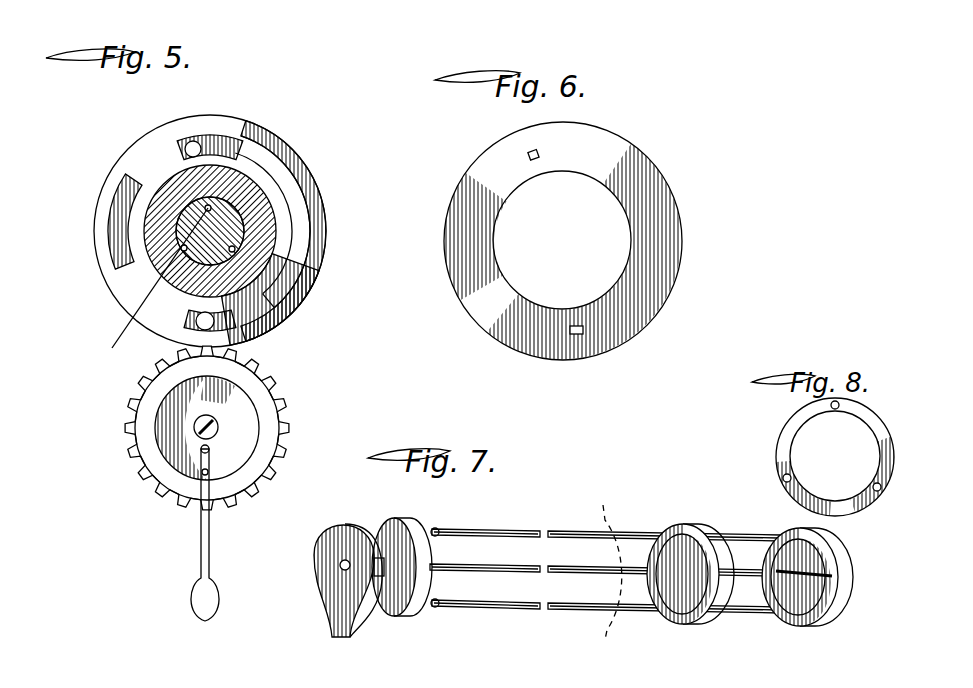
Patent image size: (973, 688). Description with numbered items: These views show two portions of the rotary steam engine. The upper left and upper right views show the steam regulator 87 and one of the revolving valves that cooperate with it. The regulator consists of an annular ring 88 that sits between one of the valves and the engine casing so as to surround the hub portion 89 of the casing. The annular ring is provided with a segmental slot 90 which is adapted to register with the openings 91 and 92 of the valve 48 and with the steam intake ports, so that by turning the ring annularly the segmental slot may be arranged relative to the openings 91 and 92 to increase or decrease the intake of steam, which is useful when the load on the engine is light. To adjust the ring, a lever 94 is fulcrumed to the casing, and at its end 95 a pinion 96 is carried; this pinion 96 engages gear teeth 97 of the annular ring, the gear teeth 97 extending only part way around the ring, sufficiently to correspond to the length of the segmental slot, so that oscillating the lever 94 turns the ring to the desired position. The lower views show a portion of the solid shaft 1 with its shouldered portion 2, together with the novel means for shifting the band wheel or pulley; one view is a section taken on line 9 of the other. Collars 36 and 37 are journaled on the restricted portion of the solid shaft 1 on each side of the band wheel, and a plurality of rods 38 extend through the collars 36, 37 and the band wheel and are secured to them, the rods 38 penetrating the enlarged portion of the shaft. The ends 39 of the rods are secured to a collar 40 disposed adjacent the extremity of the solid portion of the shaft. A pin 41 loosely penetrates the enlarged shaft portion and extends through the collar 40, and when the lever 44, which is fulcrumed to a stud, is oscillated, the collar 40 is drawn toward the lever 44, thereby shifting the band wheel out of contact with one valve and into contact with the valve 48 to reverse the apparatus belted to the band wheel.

In FIG. 5, the solid shaft 1 is at (159, 284).
In FIG. 5, the shouldered portion 2 is at (160, 187).
In FIG. 7, the section line 9 is at (610, 571).
In FIG. 7, the collar 36 is at (834, 563).
In FIG. 7, the collar 37 is at (688, 526).
In FIG. 8, the collar 37 is at (860, 508).
In FIG. 5, the rods 38 is at (208, 208).
In FIG. 7, the rods 38 is at (525, 566).
In FIG. 8, the rods 38 is at (840, 406).
In FIG. 7, the ends of rods 39 is at (437, 600).
In FIG. 7, the collar 40 is at (397, 602).
In FIG. 7, the pin 41 is at (391, 520).
In FIG. 7, the lever 44 is at (334, 543).
In FIG. 6, the valve 48 is at (652, 312).
In FIG. 5, the regulator 87 is at (307, 178).
In FIG. 5, the annular ring 88 is at (317, 250).
In FIG. 5, the hub portion 89 is at (249, 200).
In FIG. 5, the segmental slot 90 is at (120, 273).
In FIG. 5, the opening 91 is at (191, 141).
In FIG. 6, the opening 91 is at (530, 153).
In FIG. 5, the opening 92 is at (214, 330).
In FIG. 6, the opening 92 is at (577, 334).
In FIG. 5, the lever 94 is at (209, 536).
In FIG. 5, the end of lever 95 is at (200, 470).
In FIG. 5, the pinion 96 is at (262, 432).
In FIG. 5, the gear teeth 97 is at (186, 352).